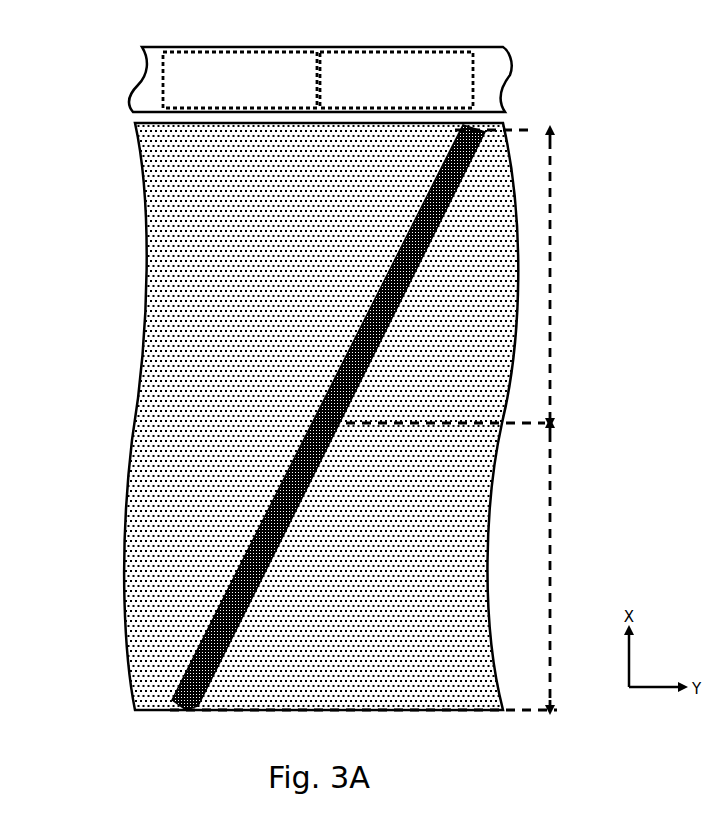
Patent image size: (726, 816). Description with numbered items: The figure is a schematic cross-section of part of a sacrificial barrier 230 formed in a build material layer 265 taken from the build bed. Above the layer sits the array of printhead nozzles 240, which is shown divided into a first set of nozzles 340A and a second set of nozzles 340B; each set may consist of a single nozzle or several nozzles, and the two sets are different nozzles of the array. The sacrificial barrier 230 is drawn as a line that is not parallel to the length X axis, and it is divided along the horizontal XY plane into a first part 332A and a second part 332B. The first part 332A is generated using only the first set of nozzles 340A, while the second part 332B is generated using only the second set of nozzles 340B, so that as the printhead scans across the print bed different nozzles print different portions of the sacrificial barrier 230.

The array of printhead nozzles 240 is at (434, 47).
The first set of nozzles 340A is at (396, 80).
The second set of nozzles 340B is at (240, 80).
The build material layer 265 is at (150, 268).
The sacrificial barrier 230 is at (190, 660).
The first part 332A is at (590, 258).
The second part 332B is at (590, 553).